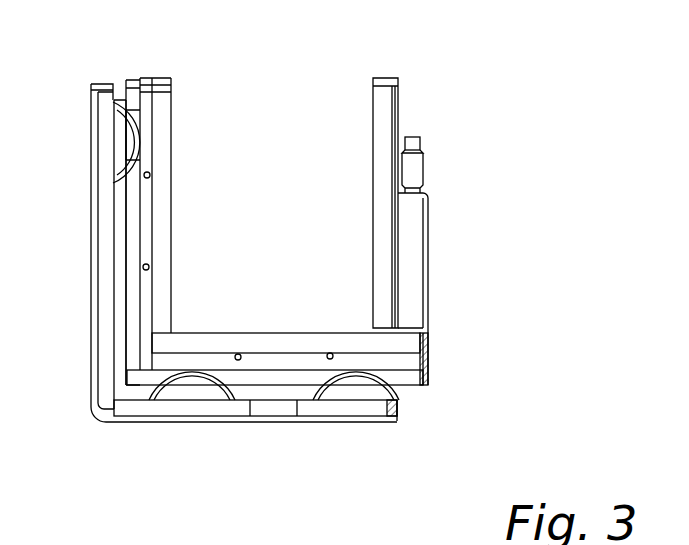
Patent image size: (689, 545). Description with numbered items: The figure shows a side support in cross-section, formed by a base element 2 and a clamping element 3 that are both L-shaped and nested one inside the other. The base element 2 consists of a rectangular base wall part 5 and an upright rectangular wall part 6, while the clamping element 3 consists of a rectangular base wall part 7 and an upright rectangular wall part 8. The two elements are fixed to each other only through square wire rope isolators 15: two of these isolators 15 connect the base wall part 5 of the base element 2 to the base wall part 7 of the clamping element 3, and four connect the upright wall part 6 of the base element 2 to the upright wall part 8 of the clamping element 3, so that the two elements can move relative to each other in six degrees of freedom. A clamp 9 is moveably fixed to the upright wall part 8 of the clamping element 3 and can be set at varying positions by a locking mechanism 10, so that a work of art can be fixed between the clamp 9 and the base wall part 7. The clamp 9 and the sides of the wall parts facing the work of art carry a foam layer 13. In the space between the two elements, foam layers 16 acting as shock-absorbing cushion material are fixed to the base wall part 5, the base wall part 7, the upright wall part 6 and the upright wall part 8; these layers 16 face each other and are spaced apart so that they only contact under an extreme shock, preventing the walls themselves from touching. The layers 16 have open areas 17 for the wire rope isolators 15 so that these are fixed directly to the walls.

The base element 2 is at (350, 417).
The clamping element 3 is at (150, 207).
The base wall part 5 is at (97, 335).
The upright wall part 6 is at (399, 417).
The base wall part 7 is at (147, 100).
The upright wall part 8 is at (425, 363).
The clamp 9 is at (398, 95).
The locking mechanism 10 is at (418, 170).
The foam layer 13 is at (168, 250).
The square wire rope isolator 15 is at (118, 100).
The foam layer 16 is at (105, 297).
The open area 17 is at (138, 145).